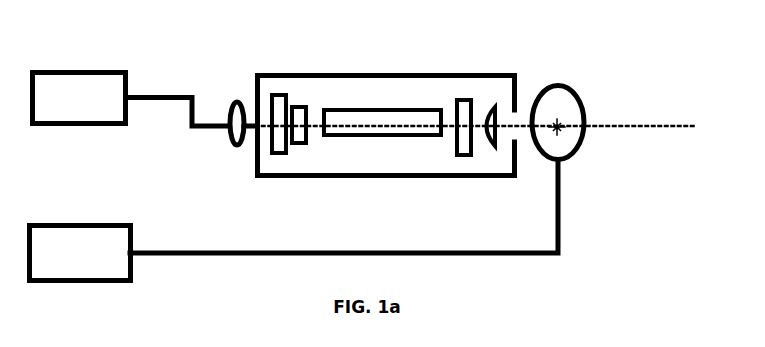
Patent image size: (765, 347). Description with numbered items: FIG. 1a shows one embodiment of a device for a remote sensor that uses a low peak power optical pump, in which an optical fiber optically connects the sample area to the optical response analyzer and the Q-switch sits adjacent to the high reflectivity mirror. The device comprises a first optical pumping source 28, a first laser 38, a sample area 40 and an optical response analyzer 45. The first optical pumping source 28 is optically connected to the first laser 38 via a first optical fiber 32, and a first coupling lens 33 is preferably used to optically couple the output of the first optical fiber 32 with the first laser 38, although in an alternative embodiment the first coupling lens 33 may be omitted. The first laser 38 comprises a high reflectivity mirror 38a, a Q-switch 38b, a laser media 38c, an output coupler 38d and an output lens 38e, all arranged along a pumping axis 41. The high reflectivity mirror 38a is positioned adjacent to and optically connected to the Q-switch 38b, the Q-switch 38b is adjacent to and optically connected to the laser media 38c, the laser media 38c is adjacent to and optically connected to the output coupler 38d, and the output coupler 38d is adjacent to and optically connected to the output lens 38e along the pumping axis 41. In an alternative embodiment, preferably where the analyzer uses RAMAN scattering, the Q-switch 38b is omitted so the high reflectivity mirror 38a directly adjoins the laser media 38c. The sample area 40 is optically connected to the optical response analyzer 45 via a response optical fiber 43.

The first optical pumping source 28 is at (79, 98).
The first optical fiber 32 is at (198, 79).
The first coupling lens 33 is at (237, 163).
The first laser 38 is at (382, 59).
The high reflectivity mirror 38a is at (284, 81).
The Q-switch 38b is at (294, 159).
The laser media 38c is at (382, 152).
The output coupler 38d is at (469, 83).
The output lens 38e is at (493, 164).
The sample area 40 is at (579, 76).
The pumping axis 41 is at (683, 136).
The response optical fiber 43 is at (573, 194).
The optical response analyzer 45 is at (80, 253).